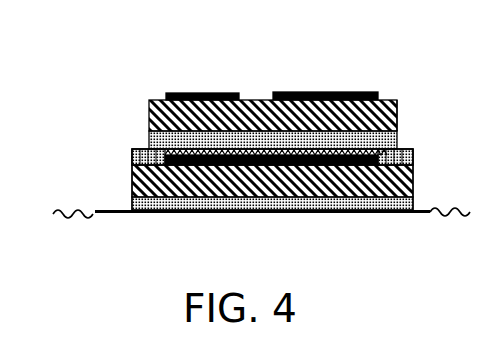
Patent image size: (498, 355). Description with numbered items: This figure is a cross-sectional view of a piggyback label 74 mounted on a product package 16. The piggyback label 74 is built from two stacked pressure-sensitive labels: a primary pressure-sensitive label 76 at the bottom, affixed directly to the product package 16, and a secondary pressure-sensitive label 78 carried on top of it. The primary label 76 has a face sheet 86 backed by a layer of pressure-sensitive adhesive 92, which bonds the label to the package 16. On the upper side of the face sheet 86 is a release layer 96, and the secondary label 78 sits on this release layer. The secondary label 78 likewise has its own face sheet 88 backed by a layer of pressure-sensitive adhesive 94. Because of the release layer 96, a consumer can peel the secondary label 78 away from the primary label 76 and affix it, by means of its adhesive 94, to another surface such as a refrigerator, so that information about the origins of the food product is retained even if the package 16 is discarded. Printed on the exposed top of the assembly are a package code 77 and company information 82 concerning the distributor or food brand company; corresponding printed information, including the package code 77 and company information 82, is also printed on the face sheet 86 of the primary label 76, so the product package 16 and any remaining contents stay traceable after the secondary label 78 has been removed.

The product package 16 is at (110, 213).
The piggyback label 74 is at (147, 78).
The primary pressure-sensitive label 76 is at (130, 161).
The package code 77 is at (302, 92).
The secondary pressure-sensitive label 78 is at (401, 103).
The company information 82 is at (213, 90).
The face sheet of primary label 86 is at (130, 180).
The face sheet of secondary label 88 is at (157, 115).
The pressure-sensitive adhesive layer of primary label 92 is at (402, 205).
The pressure-sensitive adhesive layer of secondary label 94 is at (398, 136).
The release layer 96 is at (413, 158).